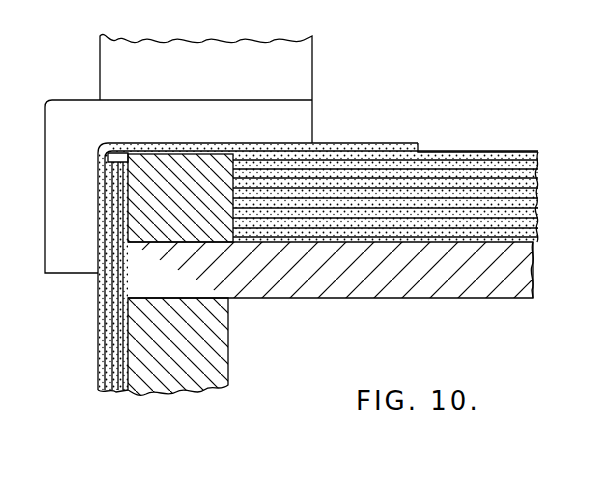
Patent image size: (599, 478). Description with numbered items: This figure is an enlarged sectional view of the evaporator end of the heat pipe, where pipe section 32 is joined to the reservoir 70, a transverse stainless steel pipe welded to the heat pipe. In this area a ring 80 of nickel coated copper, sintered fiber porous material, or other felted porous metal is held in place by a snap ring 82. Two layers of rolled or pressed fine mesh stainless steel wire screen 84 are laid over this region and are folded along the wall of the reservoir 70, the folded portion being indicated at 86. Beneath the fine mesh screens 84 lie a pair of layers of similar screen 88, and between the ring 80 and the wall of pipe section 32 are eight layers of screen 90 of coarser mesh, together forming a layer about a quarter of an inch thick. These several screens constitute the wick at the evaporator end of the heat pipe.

The pipe section 32 is at (440, 292).
The reservoir 70 is at (185, 385).
The ring 80 is at (163, 203).
The snap ring 82 is at (82, 105).
The fine mesh stainless steel wire screen 84 is at (385, 143).
The folded screen portion 86 is at (103, 337).
The screen layers 88 is at (488, 160).
The coarser mesh screen 90 is at (527, 198).